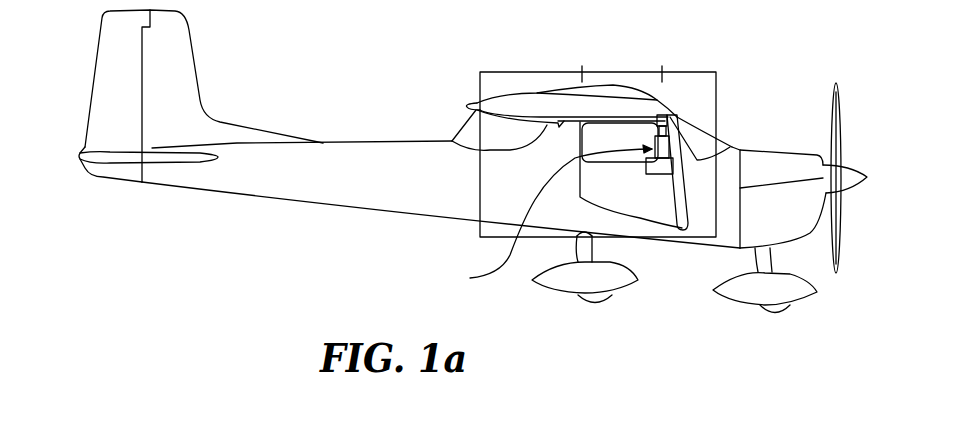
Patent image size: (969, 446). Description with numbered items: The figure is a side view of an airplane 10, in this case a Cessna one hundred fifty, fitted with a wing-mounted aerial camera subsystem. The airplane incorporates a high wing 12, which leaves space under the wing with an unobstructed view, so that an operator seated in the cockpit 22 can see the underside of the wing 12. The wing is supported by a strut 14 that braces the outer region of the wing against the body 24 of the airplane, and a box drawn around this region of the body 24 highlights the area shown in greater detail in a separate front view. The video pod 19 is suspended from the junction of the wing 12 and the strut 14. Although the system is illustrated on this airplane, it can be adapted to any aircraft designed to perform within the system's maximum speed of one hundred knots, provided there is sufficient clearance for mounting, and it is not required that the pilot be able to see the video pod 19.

The airplane 10 is at (383, 220).
The high wing 12 is at (613, 90).
The strut 14 is at (678, 210).
The video pod 19 is at (549, 219).
The cockpit 22 is at (705, 138).
The body 24 is at (716, 72).